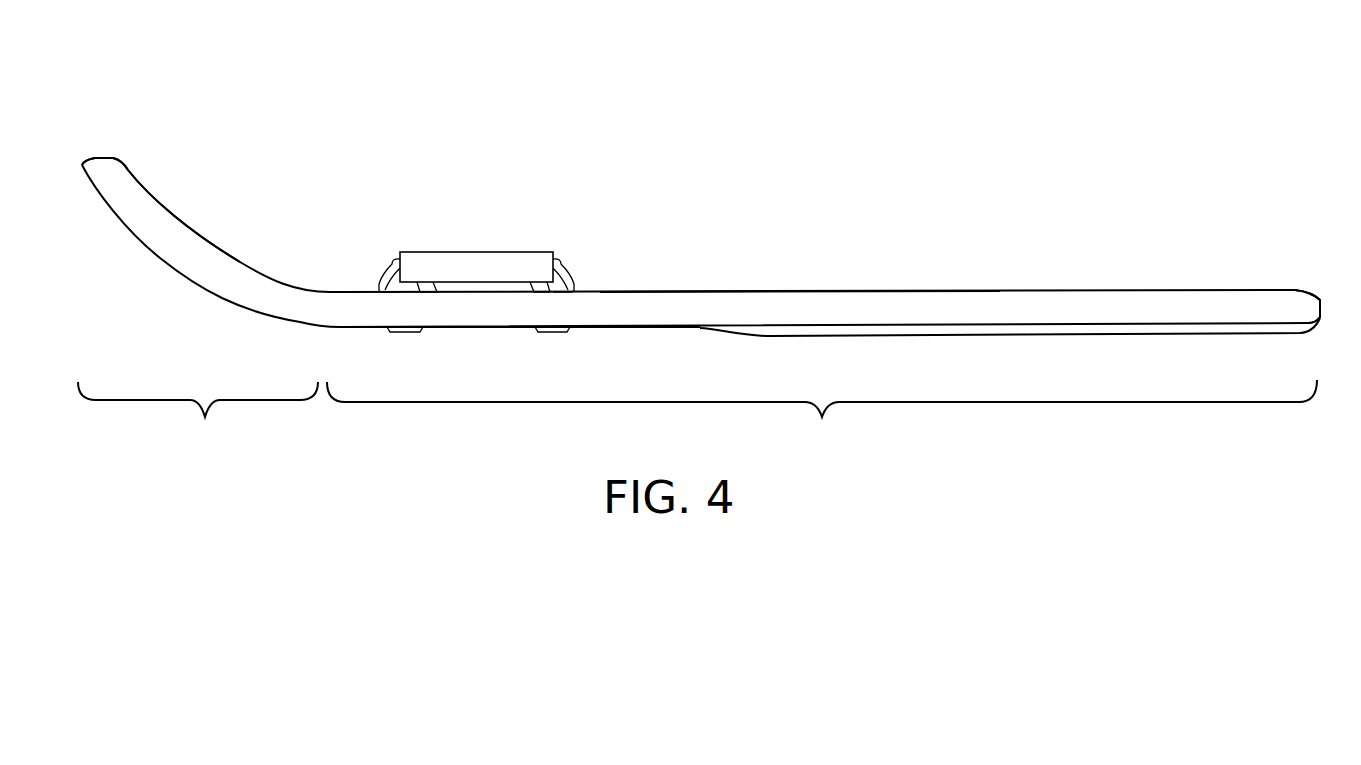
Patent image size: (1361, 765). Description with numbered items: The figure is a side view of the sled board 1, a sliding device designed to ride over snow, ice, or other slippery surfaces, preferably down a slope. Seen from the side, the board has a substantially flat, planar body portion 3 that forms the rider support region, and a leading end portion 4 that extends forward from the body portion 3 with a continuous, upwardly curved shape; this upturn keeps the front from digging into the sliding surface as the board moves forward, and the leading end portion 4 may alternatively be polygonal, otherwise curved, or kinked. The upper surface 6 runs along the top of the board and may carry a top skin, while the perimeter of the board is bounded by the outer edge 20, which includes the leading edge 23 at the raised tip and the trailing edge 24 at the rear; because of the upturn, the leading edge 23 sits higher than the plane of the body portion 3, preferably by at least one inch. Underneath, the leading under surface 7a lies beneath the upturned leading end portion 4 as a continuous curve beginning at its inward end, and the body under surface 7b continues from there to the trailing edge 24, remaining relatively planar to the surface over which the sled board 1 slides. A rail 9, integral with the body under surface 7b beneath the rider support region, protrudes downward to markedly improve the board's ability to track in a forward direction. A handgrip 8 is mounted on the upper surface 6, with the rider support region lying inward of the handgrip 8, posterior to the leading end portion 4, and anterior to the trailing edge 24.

The sled board 1 is at (717, 78).
The body portion 3 is at (822, 414).
The leading end portion 4 is at (198, 415).
The upper surface 6 is at (1077, 288).
The leading under surface 7a is at (157, 257).
The body under surface 7b is at (638, 328).
The handgrip 8 is at (462, 252).
The rail 9 is at (998, 337).
The outer edge 20 is at (780, 302).
The leading edge 23 is at (92, 158).
The trailing edge 24 is at (1323, 302).